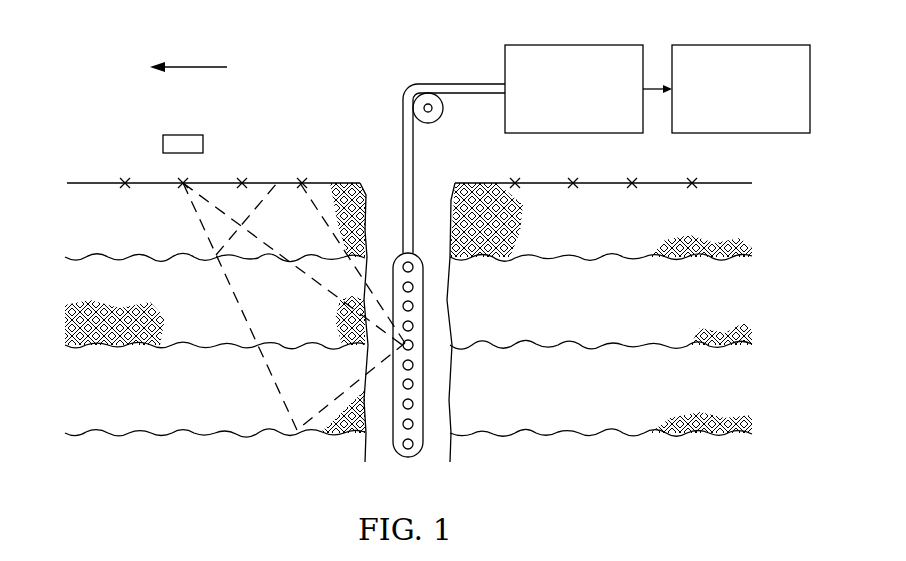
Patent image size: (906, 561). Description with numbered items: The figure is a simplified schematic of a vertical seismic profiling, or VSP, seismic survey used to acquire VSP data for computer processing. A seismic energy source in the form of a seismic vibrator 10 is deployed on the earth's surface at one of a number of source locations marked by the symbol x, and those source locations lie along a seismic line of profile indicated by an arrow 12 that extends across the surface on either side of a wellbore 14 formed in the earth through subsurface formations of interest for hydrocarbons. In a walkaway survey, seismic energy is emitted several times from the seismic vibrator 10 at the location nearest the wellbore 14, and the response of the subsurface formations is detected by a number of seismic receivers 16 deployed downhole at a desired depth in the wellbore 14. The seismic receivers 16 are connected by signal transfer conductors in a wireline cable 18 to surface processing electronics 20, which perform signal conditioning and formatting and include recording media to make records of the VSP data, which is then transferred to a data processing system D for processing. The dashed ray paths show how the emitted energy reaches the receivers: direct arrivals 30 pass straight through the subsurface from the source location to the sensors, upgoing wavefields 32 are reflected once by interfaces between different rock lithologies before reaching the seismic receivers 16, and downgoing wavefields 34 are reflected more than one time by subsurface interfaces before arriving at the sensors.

The seismic vibrator 10 is at (185, 135).
The arrow 12 is at (195, 67).
The wellbore 14 is at (450, 290).
The seismic receivers 16 is at (428, 262).
The wireline cable 18 is at (467, 84).
The surface processing electronics 20 is at (575, 45).
The direct arrivals 30 is at (330, 290).
The upgoing wavefields 32 is at (272, 384).
The downgoing wavefields 34 is at (188, 207).
The data processing system D is at (742, 42).